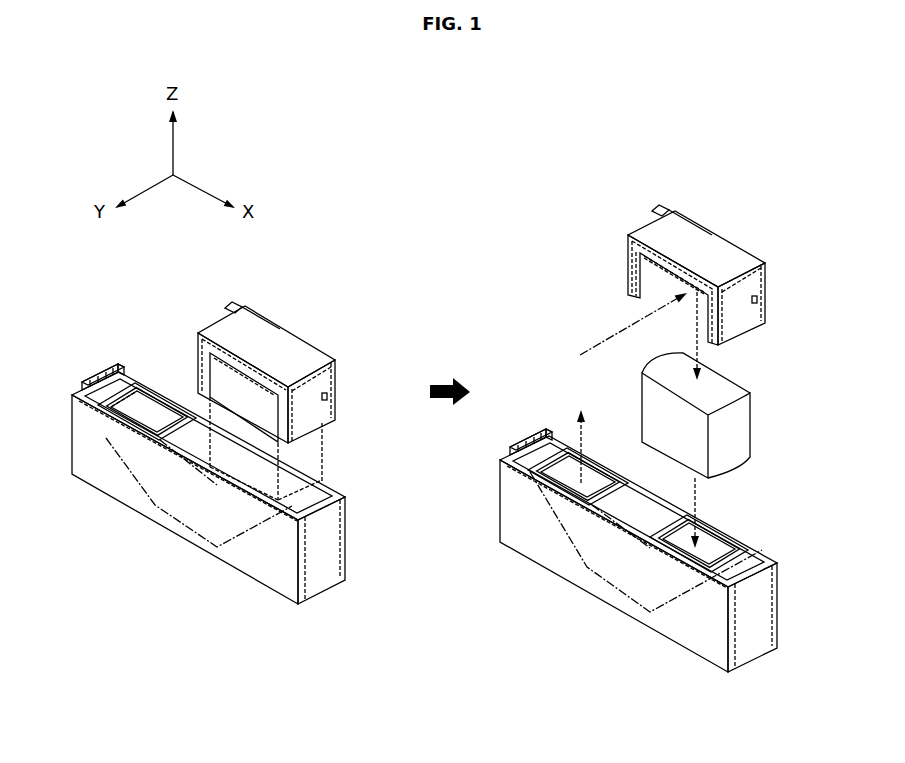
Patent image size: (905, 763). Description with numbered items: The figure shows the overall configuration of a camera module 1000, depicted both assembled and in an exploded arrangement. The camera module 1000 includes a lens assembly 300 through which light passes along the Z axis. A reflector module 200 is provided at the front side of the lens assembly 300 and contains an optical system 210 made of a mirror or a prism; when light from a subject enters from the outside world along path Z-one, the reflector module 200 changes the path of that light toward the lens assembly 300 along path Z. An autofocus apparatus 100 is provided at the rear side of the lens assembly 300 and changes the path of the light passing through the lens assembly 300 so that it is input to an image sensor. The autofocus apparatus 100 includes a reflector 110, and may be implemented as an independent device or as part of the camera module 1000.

The camera module 1000 is at (483, 210).
The autofocus apparatus 100 is at (163, 547).
The reflector 110 is at (146, 408).
The reflector module 200 is at (320, 346).
The optical system 210 is at (223, 368).
The lens assembly 300 is at (312, 462).